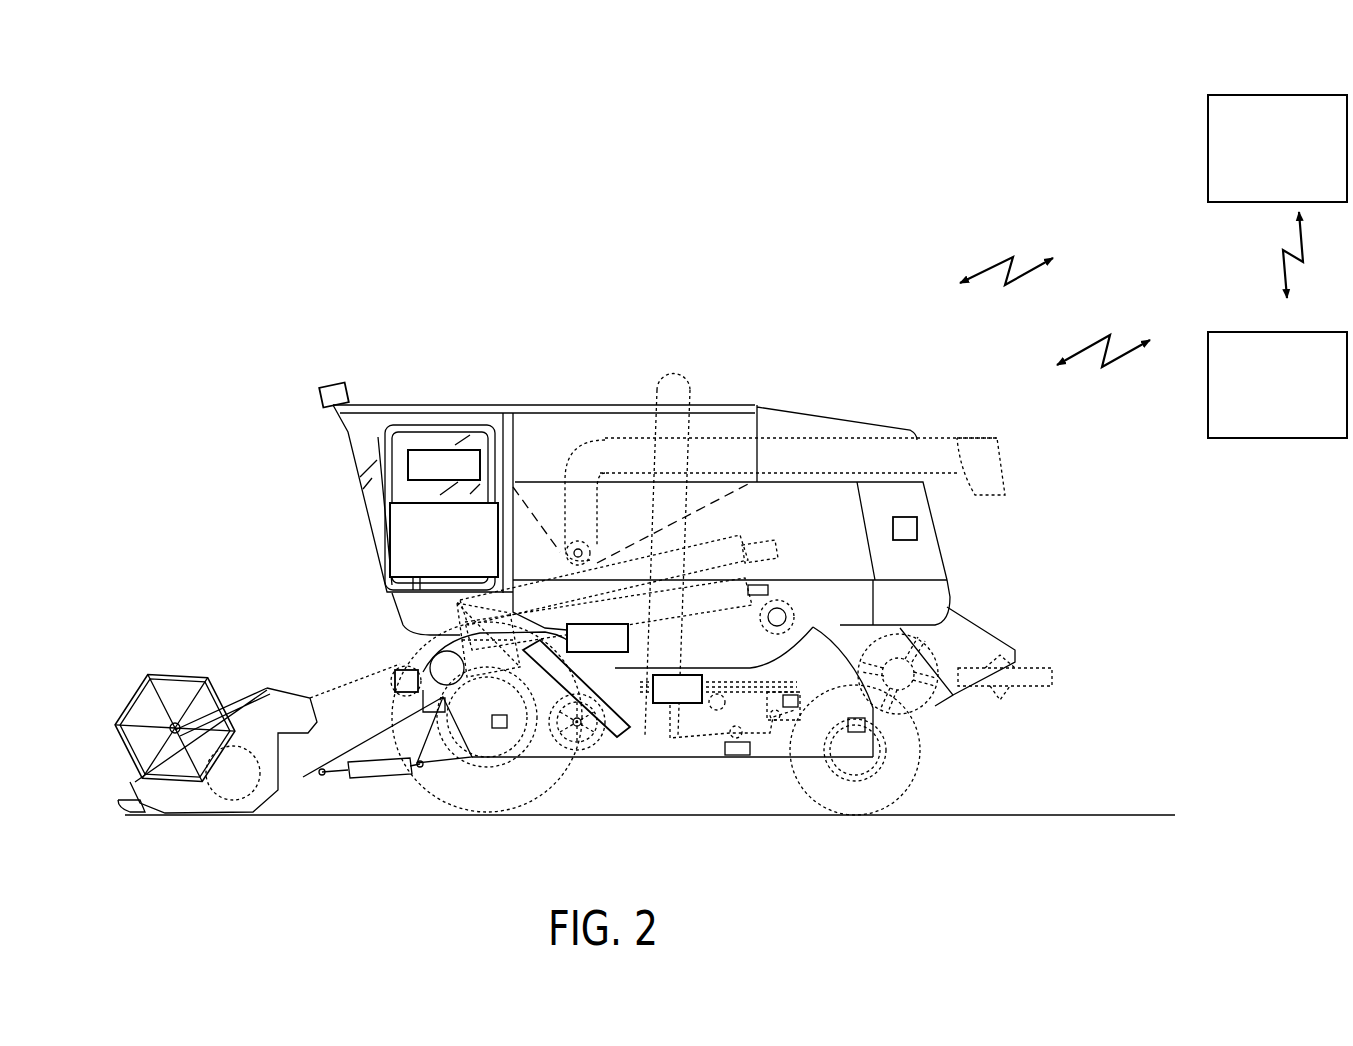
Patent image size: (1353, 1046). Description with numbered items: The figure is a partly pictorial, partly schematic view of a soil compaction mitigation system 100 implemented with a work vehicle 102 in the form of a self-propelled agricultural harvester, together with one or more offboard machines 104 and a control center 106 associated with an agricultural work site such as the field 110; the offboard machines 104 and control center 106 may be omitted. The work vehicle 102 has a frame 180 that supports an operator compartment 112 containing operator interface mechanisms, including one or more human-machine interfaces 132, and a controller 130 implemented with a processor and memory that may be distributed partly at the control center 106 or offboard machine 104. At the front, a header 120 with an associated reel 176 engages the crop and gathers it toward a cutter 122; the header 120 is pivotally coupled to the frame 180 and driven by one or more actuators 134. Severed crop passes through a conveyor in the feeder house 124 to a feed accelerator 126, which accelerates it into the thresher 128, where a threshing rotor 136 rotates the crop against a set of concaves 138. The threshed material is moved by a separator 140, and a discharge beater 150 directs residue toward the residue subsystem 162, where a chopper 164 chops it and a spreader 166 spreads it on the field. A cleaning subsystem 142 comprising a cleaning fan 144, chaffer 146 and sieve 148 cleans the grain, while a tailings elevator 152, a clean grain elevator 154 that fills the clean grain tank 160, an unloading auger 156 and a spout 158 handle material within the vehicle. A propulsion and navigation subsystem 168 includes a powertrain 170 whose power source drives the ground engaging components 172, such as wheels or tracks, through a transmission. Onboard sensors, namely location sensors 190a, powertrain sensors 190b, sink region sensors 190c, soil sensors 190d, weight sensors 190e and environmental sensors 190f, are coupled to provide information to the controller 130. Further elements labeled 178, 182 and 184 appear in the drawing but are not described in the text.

The soil compaction mitigation system 100 is at (595, 258).
The work vehicle 102 is at (245, 478).
The offboard machine 104 is at (1280, 94).
The control center 106 is at (1280, 331).
The field 110 is at (440, 763).
The operator compartment 112 is at (425, 406).
The header 120 is at (148, 700).
The cutter 122 is at (140, 808).
The feeder house 124 is at (348, 683).
The feed accelerator 126 is at (433, 652).
The thresher 128 is at (703, 538).
The controller 130 is at (426, 478).
The human-machine interface 132 is at (426, 552).
The actuator 134 is at (375, 778).
The threshing rotor 136 is at (746, 540).
The concaves 138 is at (768, 592).
The separator 140 is at (697, 628).
The cleaning subsystem 142 is at (800, 722).
The cleaning fan 144 is at (548, 750).
The chaffer 146 is at (792, 683).
The sieve 148 is at (745, 705).
The discharge beater 150 is at (795, 612).
The tailings elevator 152 is at (560, 645).
The clean grain elevator 154 is at (687, 738).
The unloading auger 156 is at (592, 553).
The spout 158 is at (975, 437).
The clean grain tank 160 is at (537, 475).
The residue subsystem 162 is at (993, 627).
The chopper 164 is at (905, 708).
The spreader 166 is at (977, 688).
The propulsion and navigation subsystem 168 is at (596, 668).
The powertrain 170 is at (579, 650).
The ground engaging components 172 is at (420, 770).
The reel 176 is at (210, 680).
The grain tank conveyor 178 is at (659, 701).
The frame 180 is at (672, 705).
The reel bat 182 is at (195, 667).
The ground 184 is at (170, 818).
The location sensors 190a is at (393, 667).
The powertrain sensors 190b is at (497, 730).
The sink region sensors 190c is at (345, 385).
The soil sensors 190d is at (737, 756).
The weight sensors 190e is at (857, 733).
The environmental sensors 190f is at (917, 528).